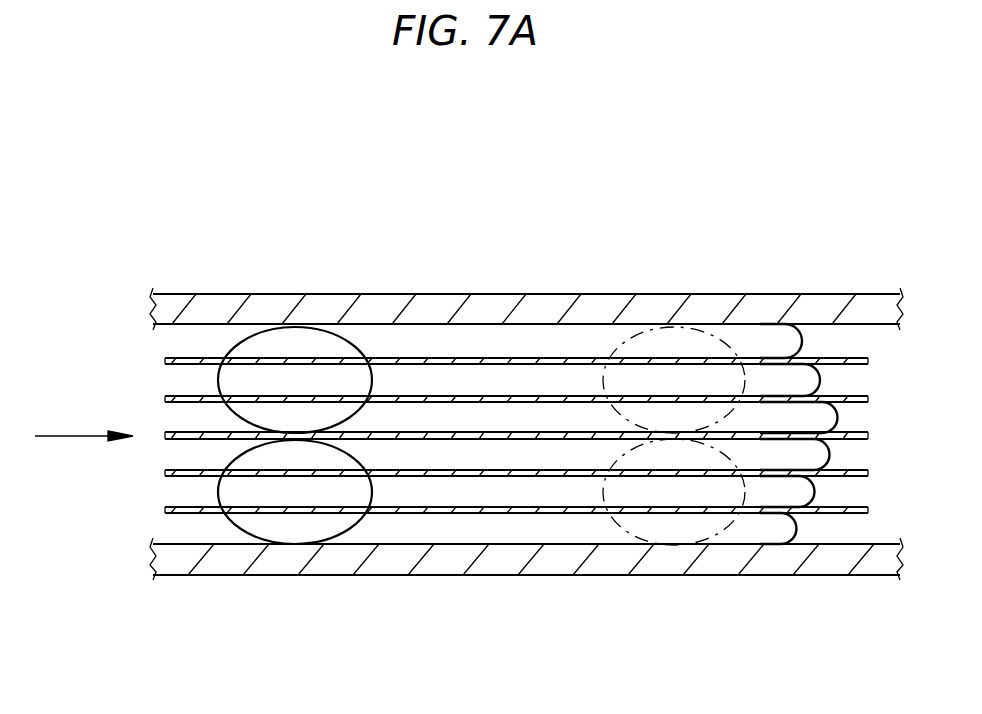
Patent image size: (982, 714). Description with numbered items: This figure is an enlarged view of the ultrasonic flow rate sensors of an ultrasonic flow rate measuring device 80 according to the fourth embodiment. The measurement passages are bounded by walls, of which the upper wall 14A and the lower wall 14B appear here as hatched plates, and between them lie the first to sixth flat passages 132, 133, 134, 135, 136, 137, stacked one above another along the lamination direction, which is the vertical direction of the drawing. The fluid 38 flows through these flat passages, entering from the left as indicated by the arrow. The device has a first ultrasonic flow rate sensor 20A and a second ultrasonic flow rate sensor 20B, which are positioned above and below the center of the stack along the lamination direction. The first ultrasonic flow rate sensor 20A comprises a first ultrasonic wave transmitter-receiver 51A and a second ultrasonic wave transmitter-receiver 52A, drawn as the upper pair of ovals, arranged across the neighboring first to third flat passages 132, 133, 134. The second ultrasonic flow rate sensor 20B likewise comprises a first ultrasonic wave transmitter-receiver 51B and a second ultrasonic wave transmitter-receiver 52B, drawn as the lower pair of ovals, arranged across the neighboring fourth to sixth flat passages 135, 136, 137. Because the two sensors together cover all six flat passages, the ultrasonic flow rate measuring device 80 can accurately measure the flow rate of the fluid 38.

The wall 14A is at (662, 310).
The wall 14B is at (667, 562).
The first ultrasonic flow rate sensor 20A is at (366, 232).
The second ultrasonic flow rate sensor 20B is at (605, 608).
The ultrasonic flow rate measuring device 80 is at (730, 244).
The fluid 38 is at (820, 380).
The first ultrasonic wave transmitter-receiver 51A is at (240, 342).
The first ultrasonic wave transmitter-receiver 51B is at (243, 530).
The second ultrasonic wave transmitter-receiver 52A is at (607, 340).
The second ultrasonic wave transmitter-receiver 52B is at (723, 527).
The first flat passage 132 is at (358, 335).
The second flat passage 133 is at (458, 372).
The third flat passage 134 is at (552, 412).
The fourth flat passage 135 is at (437, 453).
The fifth flat passage 136 is at (473, 495).
The sixth flat passage 137 is at (545, 530).